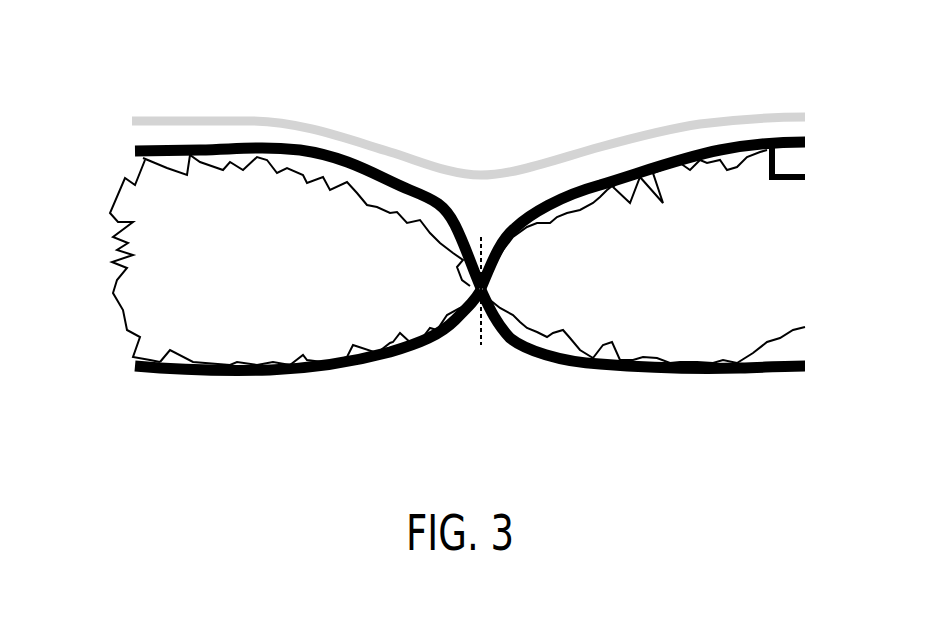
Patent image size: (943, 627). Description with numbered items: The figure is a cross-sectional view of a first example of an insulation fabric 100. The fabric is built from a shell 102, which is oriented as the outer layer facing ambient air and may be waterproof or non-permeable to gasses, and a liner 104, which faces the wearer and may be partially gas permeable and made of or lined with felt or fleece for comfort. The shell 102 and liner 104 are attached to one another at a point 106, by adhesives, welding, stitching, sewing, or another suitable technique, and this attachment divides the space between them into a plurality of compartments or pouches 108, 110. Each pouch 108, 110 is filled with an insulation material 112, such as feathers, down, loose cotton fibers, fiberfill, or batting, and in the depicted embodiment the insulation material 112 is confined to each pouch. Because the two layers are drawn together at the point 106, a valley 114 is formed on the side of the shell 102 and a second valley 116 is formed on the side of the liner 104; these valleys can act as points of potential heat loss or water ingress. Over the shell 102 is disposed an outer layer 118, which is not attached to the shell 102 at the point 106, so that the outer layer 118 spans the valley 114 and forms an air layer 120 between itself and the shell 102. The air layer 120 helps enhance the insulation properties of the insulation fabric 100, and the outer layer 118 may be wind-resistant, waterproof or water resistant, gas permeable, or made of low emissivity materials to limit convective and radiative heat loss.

The insulation fabric 100 is at (704, 60).
The shell 102 is at (138, 151).
The liner 104 is at (142, 366).
The point 106 is at (480, 343).
The pouch 108 is at (380, 197).
The pouch 110 is at (610, 368).
The insulation material 112 is at (253, 338).
The valley 114 is at (490, 222).
The second valley 116 is at (497, 352).
The outer layer 118 is at (265, 115).
The air layer 120 is at (625, 155).